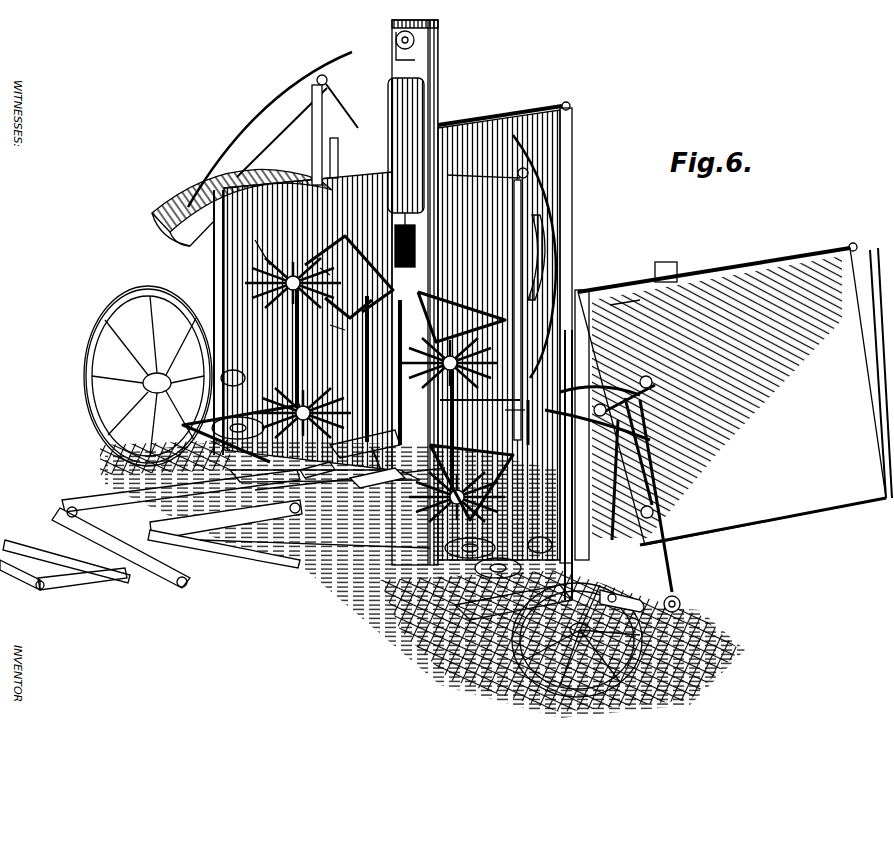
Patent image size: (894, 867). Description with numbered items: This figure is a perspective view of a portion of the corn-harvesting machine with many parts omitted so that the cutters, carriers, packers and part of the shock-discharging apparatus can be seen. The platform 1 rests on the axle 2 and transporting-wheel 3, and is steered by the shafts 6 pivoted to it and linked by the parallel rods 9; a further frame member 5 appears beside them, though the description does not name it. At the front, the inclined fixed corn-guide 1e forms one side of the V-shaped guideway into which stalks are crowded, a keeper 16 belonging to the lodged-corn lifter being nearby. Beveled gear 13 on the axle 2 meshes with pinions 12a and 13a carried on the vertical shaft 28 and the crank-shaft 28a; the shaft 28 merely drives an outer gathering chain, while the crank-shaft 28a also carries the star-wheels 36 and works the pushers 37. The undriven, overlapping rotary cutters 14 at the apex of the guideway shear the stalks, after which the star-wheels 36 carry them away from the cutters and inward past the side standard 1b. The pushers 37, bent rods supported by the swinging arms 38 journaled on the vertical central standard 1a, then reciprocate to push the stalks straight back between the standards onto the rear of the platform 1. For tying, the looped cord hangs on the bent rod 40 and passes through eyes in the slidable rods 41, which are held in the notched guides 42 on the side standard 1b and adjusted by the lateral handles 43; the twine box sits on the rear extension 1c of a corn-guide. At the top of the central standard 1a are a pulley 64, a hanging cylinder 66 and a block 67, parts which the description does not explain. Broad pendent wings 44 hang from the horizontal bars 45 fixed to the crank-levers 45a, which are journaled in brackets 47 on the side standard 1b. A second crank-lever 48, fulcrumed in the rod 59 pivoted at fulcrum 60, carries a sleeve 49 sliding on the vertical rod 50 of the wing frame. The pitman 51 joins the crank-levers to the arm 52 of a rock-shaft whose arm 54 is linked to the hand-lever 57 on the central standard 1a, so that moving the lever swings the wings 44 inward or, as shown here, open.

The platform 1 is at (349, 482).
The vertical central standard 1a is at (438, 95).
The side standard 1b is at (308, 321).
The corn-guide rear extension 1c is at (666, 262).
The fixed corn-guide 1e is at (190, 205).
The axle 2 is at (325, 511).
The transporting-wheel 3 is at (560, 690).
The pin 5 is at (366, 458).
The shaft 6 is at (275, 137).
The parallel rod 9 is at (110, 505).
The beveled pinion 12a is at (400, 448).
The beveled gear 13 is at (451, 525).
The beveled pinion 13a is at (405, 620).
The rotary cutter 14 is at (236, 440).
The keeper 16 is at (529, 422).
The vertical shaft 28 is at (213, 256).
The crank-shaft 28a is at (480, 400).
The star-wheel 36 is at (282, 272).
The pusher 37 is at (348, 371).
The swinging arm 38 is at (374, 387).
The bent rod 40 is at (340, 52).
The vertically-slidable rod 41 is at (422, 122).
The guide 42 is at (312, 126).
The lateral handle 43 is at (545, 252).
The pendent wing 44 is at (733, 404).
The horizontal bar 45 is at (538, 110).
The crank-lever 45a is at (571, 352).
The bracket 47 is at (600, 387).
The second crank-lever 48 is at (660, 465).
The sleeve 49 is at (655, 513).
The vertical rod 50 is at (623, 378).
The pitman 51 is at (616, 496).
The arm 52 is at (672, 612).
The arm 54 is at (372, 487).
The hand-lever 57 is at (355, 283).
The rod 59 is at (655, 395).
The fulcrum 60 is at (622, 586).
The pulley 64 is at (398, 64).
The cylinder 66 is at (452, 275).
The weight 67 is at (395, 246).